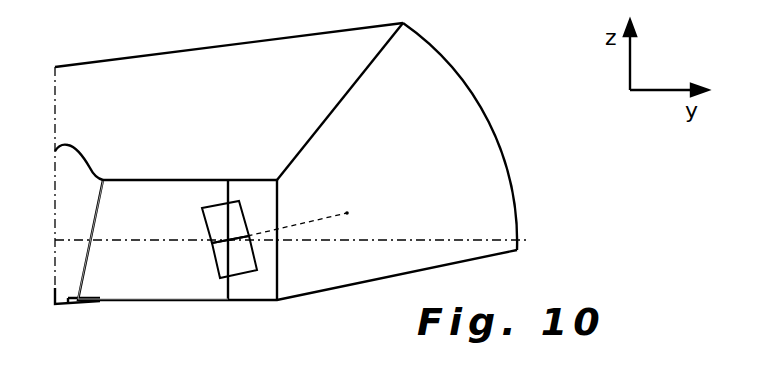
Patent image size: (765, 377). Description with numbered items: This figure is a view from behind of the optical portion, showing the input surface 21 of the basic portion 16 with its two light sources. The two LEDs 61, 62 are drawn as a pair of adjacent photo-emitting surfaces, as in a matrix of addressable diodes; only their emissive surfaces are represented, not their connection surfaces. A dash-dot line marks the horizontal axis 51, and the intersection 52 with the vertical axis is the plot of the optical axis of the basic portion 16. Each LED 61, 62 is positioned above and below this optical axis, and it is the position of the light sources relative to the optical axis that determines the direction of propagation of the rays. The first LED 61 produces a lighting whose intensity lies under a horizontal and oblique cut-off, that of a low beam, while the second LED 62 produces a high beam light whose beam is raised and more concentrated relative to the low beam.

The basic portion 16 is at (415, 128).
The input surface 21 is at (187, 272).
The horizontal axis 51 is at (474, 239).
The intersection 52 is at (228, 241).
The first LED 61 is at (217, 205).
The second LED 62 is at (243, 273).